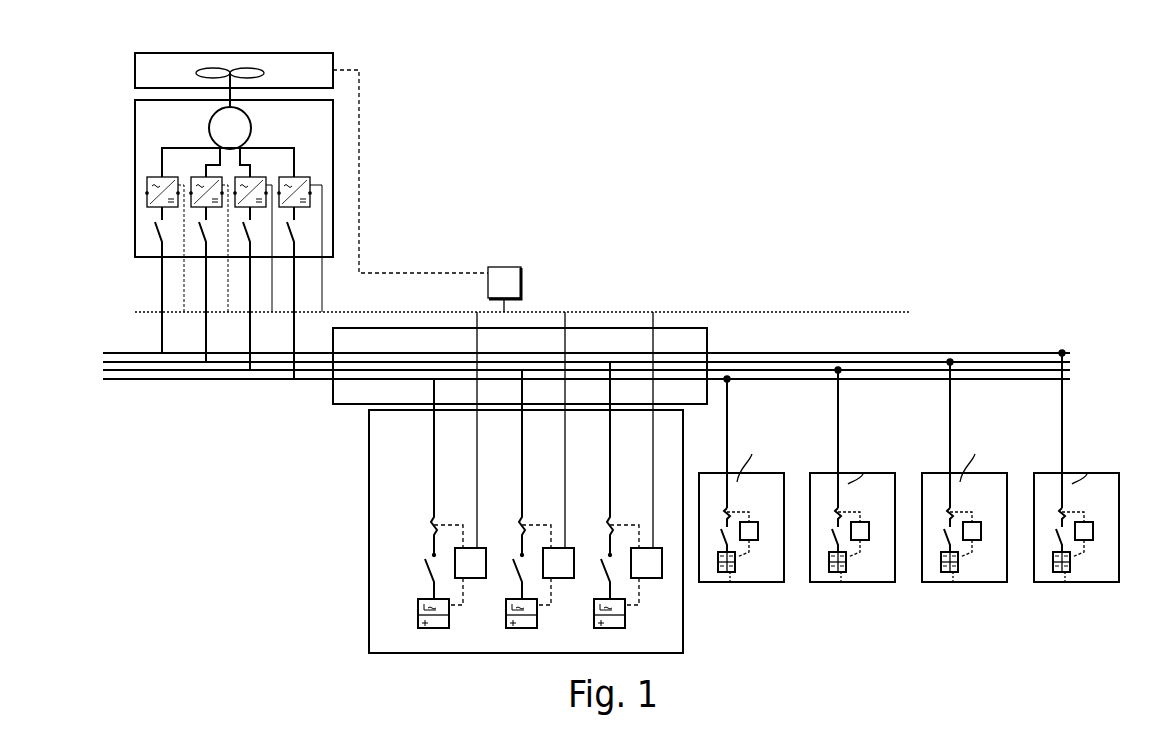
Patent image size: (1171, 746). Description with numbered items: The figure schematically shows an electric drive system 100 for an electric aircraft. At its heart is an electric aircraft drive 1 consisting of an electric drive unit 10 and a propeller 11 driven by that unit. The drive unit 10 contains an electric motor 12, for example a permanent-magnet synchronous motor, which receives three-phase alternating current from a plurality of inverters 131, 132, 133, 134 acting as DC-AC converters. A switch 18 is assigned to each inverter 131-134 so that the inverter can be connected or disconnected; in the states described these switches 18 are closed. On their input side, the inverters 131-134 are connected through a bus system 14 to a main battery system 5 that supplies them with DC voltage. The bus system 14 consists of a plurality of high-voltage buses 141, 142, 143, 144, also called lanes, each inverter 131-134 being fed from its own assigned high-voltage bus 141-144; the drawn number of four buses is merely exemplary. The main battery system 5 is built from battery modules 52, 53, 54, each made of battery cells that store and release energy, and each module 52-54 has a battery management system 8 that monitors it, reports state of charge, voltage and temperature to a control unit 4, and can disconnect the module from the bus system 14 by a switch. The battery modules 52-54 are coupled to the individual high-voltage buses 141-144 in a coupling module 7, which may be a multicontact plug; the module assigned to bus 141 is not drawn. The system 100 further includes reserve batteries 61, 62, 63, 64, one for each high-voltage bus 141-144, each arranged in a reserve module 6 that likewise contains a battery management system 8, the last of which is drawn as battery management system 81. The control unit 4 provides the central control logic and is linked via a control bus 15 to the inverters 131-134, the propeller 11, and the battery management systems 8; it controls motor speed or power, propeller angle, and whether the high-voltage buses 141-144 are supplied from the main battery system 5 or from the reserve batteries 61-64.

The electric aircraft drive 1 is at (112, 140).
The electric drive unit 10 is at (135, 177).
The propeller 11 is at (243, 70).
The electric motor 12 is at (245, 113).
The inverter 131 is at (150, 177).
The inverter 132 is at (195, 177).
The inverter 133 is at (255, 176).
The inverter 134 is at (302, 176).
The switch 18 is at (157, 230).
The control bus 15 is at (359, 222).
The control unit 4 is at (522, 265).
The coupling module 7 is at (333, 396).
The bus system 14 is at (925, 343).
The electric drive system 100 is at (772, 182).
The high-voltage bus 141 is at (947, 352).
The high-voltage bus 142 is at (980, 361).
The high-voltage bus 143 is at (1020, 369).
The high-voltage bus 144 is at (1058, 378).
The main battery system 5 is at (369, 473).
The battery module 52 is at (594, 618).
The battery module 53 is at (506, 618).
The battery module 54 is at (418, 618).
The battery management system 8 is at (470, 545).
The battery management unit 81 is at (1087, 522).
The reserve module 6 is at (919, 547).
The reserve battery 61 is at (1067, 583).
The reserve battery 62 is at (955, 583).
The reserve battery 63 is at (843, 583).
The reserve battery 64 is at (732, 583).